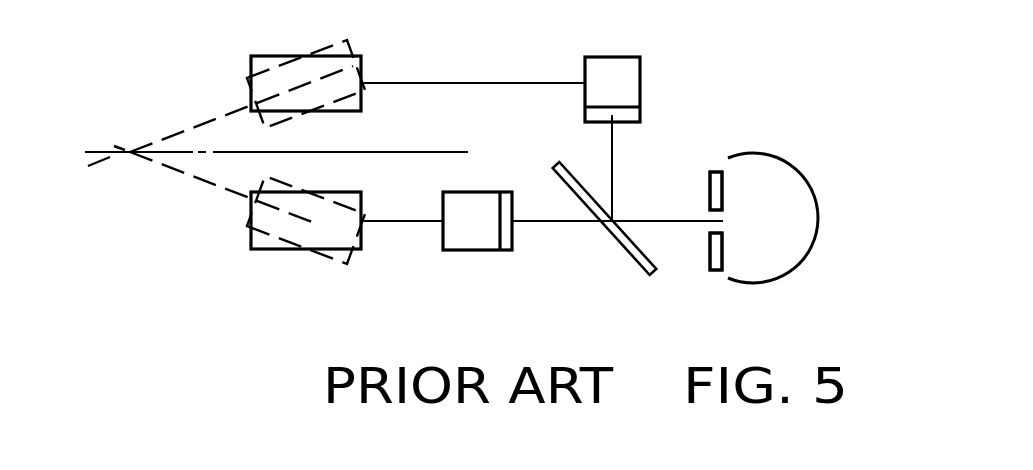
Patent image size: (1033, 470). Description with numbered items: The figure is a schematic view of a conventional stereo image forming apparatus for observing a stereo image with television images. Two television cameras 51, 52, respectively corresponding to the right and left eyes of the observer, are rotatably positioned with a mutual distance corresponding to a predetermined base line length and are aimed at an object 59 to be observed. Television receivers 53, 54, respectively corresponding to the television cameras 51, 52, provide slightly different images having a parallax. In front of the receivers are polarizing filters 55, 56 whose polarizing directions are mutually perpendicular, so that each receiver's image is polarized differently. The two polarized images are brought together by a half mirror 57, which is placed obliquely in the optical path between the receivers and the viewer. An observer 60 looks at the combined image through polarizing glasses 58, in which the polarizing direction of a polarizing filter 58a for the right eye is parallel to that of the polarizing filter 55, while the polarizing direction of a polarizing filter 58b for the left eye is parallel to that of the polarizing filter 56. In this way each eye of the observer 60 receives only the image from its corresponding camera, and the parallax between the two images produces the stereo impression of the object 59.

The television camera 51 is at (272, 56).
The television camera 52 is at (272, 250).
The television receiver 53 is at (620, 62).
The television receiver 54 is at (467, 241).
The polarizing filter 55 is at (633, 115).
The polarizing filter 56 is at (508, 241).
The half mirror 57 is at (622, 260).
The polarizing glasses 58 is at (717, 171).
The polarizing filter for the right eye 58a is at (710, 186).
The polarizing filter for the left eye 58b is at (710, 266).
The object 59 is at (130, 151).
The observer 60 is at (815, 190).